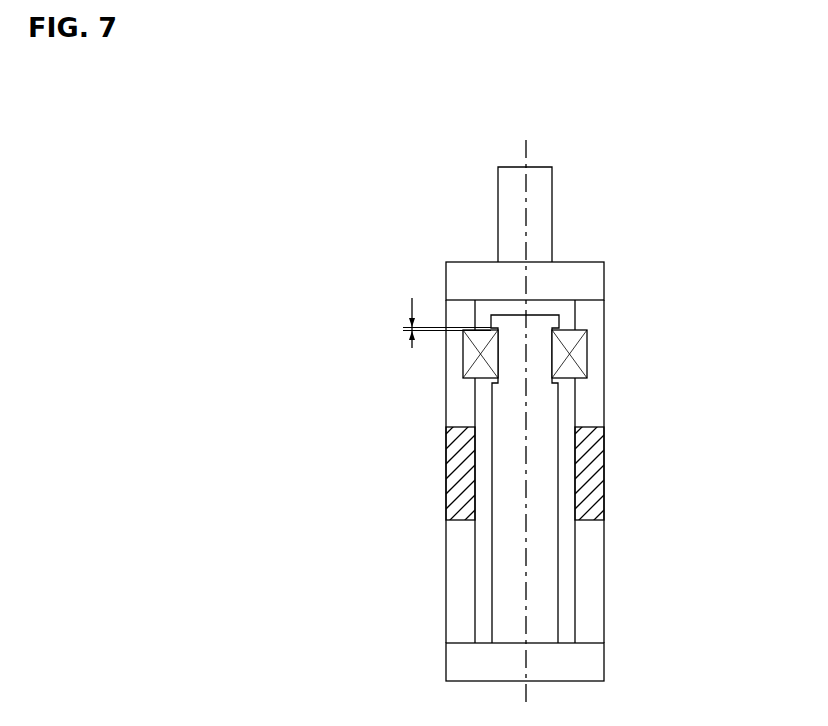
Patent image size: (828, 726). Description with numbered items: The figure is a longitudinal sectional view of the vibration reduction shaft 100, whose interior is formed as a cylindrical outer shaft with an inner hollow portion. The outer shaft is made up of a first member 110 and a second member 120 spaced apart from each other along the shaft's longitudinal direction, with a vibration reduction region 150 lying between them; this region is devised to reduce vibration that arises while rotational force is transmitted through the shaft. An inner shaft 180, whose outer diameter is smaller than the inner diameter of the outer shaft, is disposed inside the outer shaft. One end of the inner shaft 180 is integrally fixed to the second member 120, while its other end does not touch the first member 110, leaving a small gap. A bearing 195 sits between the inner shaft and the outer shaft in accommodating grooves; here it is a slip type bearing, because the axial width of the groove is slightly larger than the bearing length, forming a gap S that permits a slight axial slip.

The vibration reduction shaft 100 is at (414, 220).
The first member 110 is at (598, 392).
The second member 120 is at (457, 593).
The vibration reduction region 150 is at (593, 474).
The inner shaft 180 is at (548, 575).
The bearing 195 is at (587, 341).